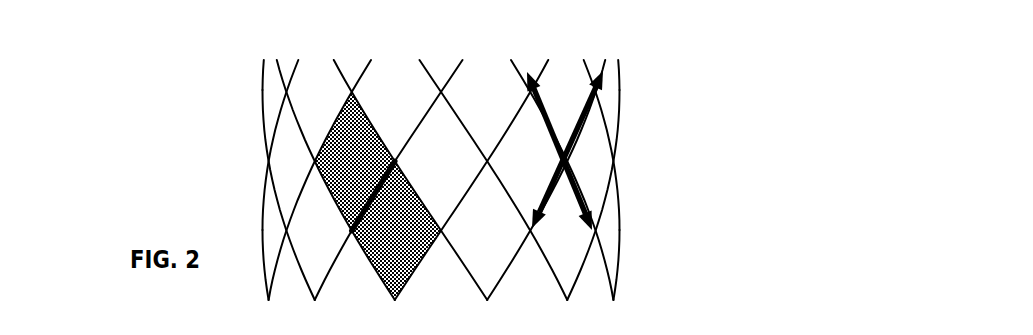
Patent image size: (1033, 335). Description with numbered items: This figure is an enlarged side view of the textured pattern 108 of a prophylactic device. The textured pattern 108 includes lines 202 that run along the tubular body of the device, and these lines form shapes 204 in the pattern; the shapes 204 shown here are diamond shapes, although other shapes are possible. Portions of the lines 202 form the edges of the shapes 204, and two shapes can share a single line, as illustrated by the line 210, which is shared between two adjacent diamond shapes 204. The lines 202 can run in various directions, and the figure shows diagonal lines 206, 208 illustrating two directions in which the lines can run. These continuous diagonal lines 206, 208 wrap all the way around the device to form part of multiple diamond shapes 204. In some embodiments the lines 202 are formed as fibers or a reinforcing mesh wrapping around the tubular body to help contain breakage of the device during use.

The textured pattern 108 is at (406, 156).
The line 202 is at (592, 266).
The shape 204 is at (335, 93).
The diagonal line 206 is at (578, 129).
The diagonal line 208 is at (580, 195).
The line 210 is at (397, 160).